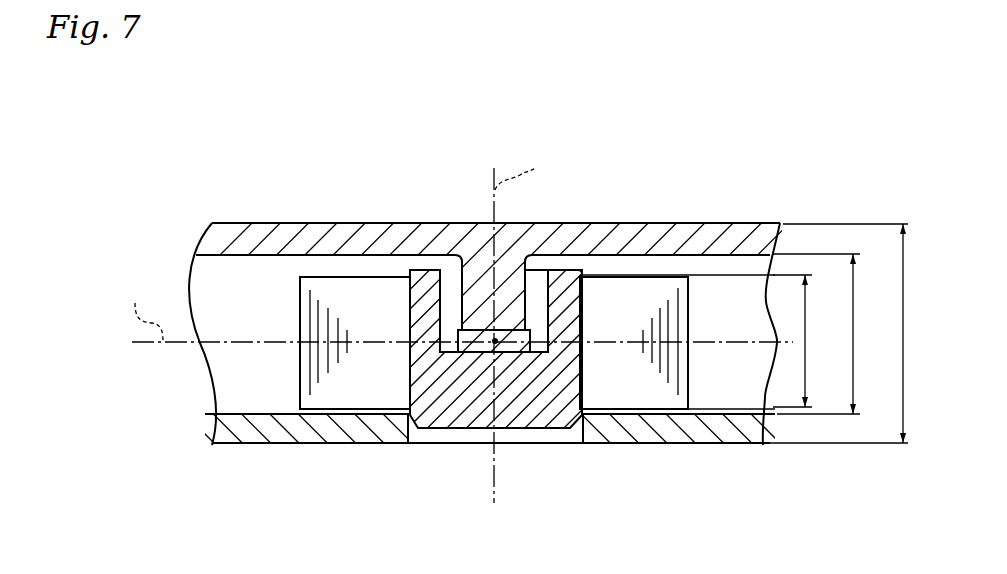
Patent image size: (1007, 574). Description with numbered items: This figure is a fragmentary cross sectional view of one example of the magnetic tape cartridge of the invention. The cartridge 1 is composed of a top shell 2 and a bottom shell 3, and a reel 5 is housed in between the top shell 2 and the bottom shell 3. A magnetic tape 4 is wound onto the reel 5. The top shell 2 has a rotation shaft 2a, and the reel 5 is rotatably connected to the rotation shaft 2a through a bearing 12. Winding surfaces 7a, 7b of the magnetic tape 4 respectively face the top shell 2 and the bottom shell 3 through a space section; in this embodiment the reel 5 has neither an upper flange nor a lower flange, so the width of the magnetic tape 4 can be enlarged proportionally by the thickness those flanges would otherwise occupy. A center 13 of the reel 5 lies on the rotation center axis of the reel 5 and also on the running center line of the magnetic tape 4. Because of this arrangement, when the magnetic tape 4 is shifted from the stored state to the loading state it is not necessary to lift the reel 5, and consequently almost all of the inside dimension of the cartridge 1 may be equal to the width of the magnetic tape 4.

The cartridge 1 is at (609, 170).
The top shell 2 is at (470, 255).
The rotation shaft 2a is at (478, 257).
The bottom shell 3 is at (707, 430).
The magnetic tape 4 is at (353, 397).
The reel 5 is at (530, 405).
The winding surface 7a is at (633, 276).
The winding surface 7b is at (645, 420).
The bearing 12 is at (520, 258).
The center of the reel 13 is at (460, 365).